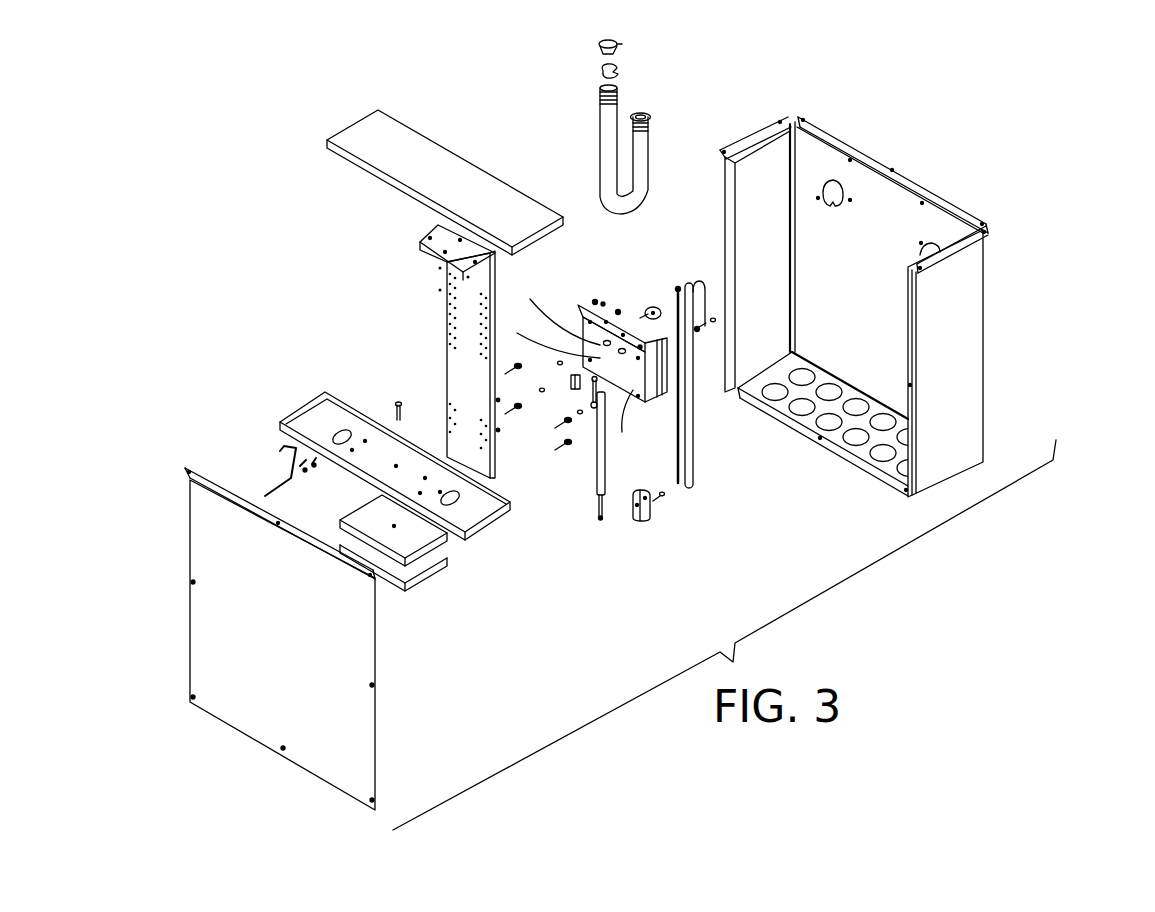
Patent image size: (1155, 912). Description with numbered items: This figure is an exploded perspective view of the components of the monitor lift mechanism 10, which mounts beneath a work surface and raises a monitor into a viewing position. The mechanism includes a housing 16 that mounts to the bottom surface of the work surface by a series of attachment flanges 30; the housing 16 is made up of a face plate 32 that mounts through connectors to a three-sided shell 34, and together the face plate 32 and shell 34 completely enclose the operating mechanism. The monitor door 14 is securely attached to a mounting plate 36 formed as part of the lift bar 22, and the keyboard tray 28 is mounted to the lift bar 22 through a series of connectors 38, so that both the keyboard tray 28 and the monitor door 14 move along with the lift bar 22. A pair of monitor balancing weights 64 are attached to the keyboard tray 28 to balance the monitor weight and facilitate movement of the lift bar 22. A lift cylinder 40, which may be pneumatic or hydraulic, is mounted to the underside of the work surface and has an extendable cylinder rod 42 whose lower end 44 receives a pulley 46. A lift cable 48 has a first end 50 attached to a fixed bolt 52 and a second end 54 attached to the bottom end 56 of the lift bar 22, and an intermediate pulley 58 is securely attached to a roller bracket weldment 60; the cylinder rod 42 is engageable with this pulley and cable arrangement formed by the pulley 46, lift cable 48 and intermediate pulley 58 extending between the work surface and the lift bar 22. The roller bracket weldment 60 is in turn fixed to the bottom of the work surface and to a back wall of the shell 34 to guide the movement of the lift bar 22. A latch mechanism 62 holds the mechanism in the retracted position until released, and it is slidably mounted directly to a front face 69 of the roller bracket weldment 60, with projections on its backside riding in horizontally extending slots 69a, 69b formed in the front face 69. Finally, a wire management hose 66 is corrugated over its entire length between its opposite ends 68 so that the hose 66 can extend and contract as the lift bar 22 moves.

The monitor lift mechanism 10 is at (1024, 272).
The monitor door 14 is at (372, 130).
The housing 16 is at (982, 405).
The lift bar 22 is at (447, 377).
The keyboard tray 28 is at (318, 418).
The attachment flanges 30 is at (768, 124).
The face plate 32 is at (203, 680).
The shell 34 is at (952, 470).
The mounting plate 36 is at (420, 243).
The connectors 38 is at (390, 450).
The lift cylinder 40 is at (596, 452).
The cylinder rod 42 is at (598, 503).
The lower end 44 is at (601, 518).
The pulley 46 is at (650, 520).
The lift cable 48 is at (693, 462).
The first end 50 is at (678, 290).
The fixed bolt 52 is at (590, 415).
The second end 54 is at (699, 333).
The bottom end 56 is at (470, 470).
The intermediate pulley 58 is at (651, 307).
The roller bracket weldment 60 is at (578, 325).
The latch mechanism 62 is at (571, 383).
The monitor balancing weights 64 is at (432, 555).
The wire management hose 66 is at (645, 163).
The opposite ends 68 is at (600, 100).
The front face 69 is at (626, 429).
The slot 69a is at (553, 309).
The slot 69b is at (547, 332).